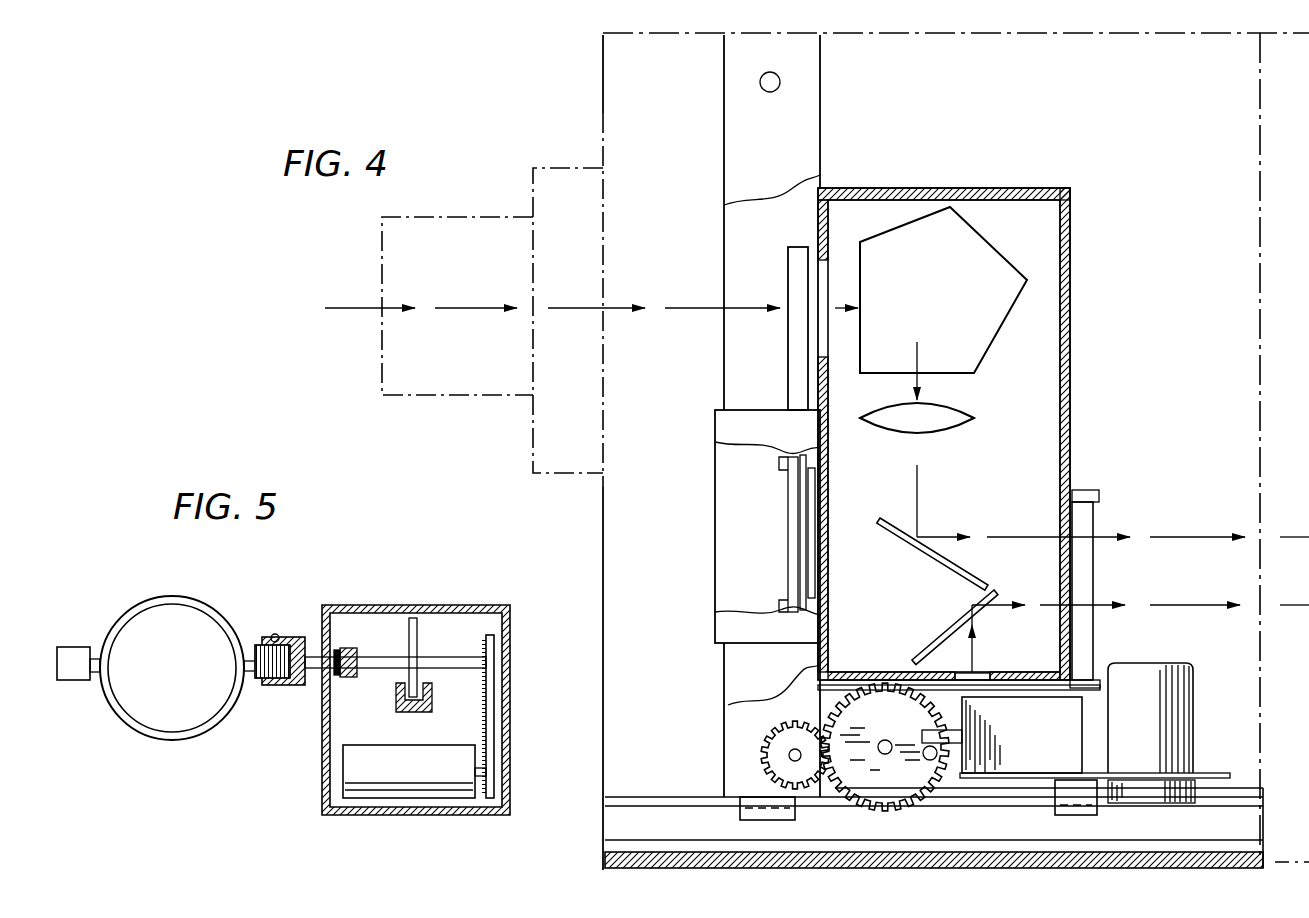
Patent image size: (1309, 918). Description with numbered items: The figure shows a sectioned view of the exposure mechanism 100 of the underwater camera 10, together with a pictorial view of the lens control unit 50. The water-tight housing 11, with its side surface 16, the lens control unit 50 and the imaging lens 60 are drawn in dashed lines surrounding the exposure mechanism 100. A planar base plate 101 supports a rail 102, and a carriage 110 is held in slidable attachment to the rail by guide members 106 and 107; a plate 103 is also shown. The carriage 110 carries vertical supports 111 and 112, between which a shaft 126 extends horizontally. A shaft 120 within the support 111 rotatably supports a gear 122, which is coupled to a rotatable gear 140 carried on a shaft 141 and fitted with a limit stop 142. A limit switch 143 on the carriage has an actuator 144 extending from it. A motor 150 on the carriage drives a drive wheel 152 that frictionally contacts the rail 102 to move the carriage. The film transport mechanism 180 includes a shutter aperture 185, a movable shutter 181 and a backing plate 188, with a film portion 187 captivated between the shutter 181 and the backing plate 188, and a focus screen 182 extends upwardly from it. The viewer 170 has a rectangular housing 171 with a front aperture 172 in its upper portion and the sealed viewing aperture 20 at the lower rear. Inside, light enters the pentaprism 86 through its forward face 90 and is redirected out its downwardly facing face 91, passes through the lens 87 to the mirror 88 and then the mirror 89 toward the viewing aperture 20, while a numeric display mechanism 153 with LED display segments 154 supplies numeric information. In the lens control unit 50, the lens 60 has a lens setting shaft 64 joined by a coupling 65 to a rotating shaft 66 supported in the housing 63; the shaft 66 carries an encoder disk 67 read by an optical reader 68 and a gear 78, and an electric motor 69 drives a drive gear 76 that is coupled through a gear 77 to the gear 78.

In FIG. 4, the underwater camera 10 is at (510, 112).
In FIG. 4, the water-tight housing 11 is at (603, 138).
In FIG. 4, the side surface 16 is at (1095, 583).
In FIG. 4, the viewing aperture 20 is at (1070, 515).
In FIG. 4, the lens control unit 50 is at (540, 185).
In FIG. 5, the lens control unit 50 is at (305, 738).
In FIG. 4, the imaging lens 60 is at (382, 283).
In FIG. 5, the imaging lens 60 is at (185, 598).
In FIG. 5, the housing 63 is at (382, 605).
In FIG. 5, the lens setting shaft 64 is at (248, 640).
In FIG. 5, the coupling 65 is at (278, 637).
In FIG. 5, the rotating shaft 66 is at (462, 655).
In FIG. 5, the encoder disk 67 is at (418, 628).
In FIG. 5, the optical reader 68 is at (396, 700).
In FIG. 5, the electric motor 69 is at (407, 785).
In FIG. 5, the drive gear 76 is at (492, 788).
In FIG. 5, the gear 77 is at (490, 700).
In FIG. 5, the gear 78 is at (492, 643).
In FIG. 4, the pentaprism 86 is at (968, 328).
In FIG. 4, the lens 87 is at (940, 432).
In FIG. 4, the mirror 88 is at (970, 570).
In FIG. 4, the mirror 89 is at (938, 632).
In FIG. 4, the forward face 90 is at (860, 272).
In FIG. 4, the downwardly facing face 91 is at (955, 375).
In FIG. 4, the exposure mechanism 100 is at (982, 394).
In FIG. 4, the base plate 101 is at (605, 865).
In FIG. 4, the rail 102 is at (630, 797).
In FIG. 4, the guide plate 103 is at (630, 840).
In FIG. 4, the guide member 106 is at (778, 820).
In FIG. 4, the guide member 107 is at (1085, 815).
In FIG. 4, the carriage 110 is at (1205, 773).
In FIG. 4, the vertical support 111 is at (795, 103).
In FIG. 4, the vertical support 112 is at (734, 248).
In FIG. 4, the shaft 120 is at (788, 760).
In FIG. 4, the gear 122 is at (778, 747).
In FIG. 4, the shaft 126 is at (760, 82).
In FIG. 4, the rotatable gear 140 is at (840, 708).
In FIG. 4, the shaft 141 is at (873, 747).
In FIG. 4, the limit stop 142 is at (955, 755).
In FIG. 4, the limit switch 143 is at (1072, 733).
In FIG. 4, the actuator 144 is at (955, 727).
In FIG. 4, the motor 150 is at (1175, 700).
In FIG. 4, the drive wheel 152 is at (1195, 785).
In FIG. 4, the numeric display mechanism 153 is at (1000, 677).
In FIG. 4, the display segment 154 is at (975, 672).
In FIG. 4, the viewer 170 is at (1072, 222).
In FIG. 4, the housing 171 is at (1068, 265).
In FIG. 4, the front aperture 172 is at (830, 283).
In FIG. 4, the film transport mechanism 180 is at (715, 433).
In FIG. 4, the movable shutter 181 is at (669, 546).
In FIG. 4, the focus screen 182 is at (797, 247).
In FIG. 4, the shutter aperture 185 is at (669, 576).
In FIG. 4, the film portion 187 is at (669, 516).
In FIG. 4, the backing plate 188 is at (836, 478).